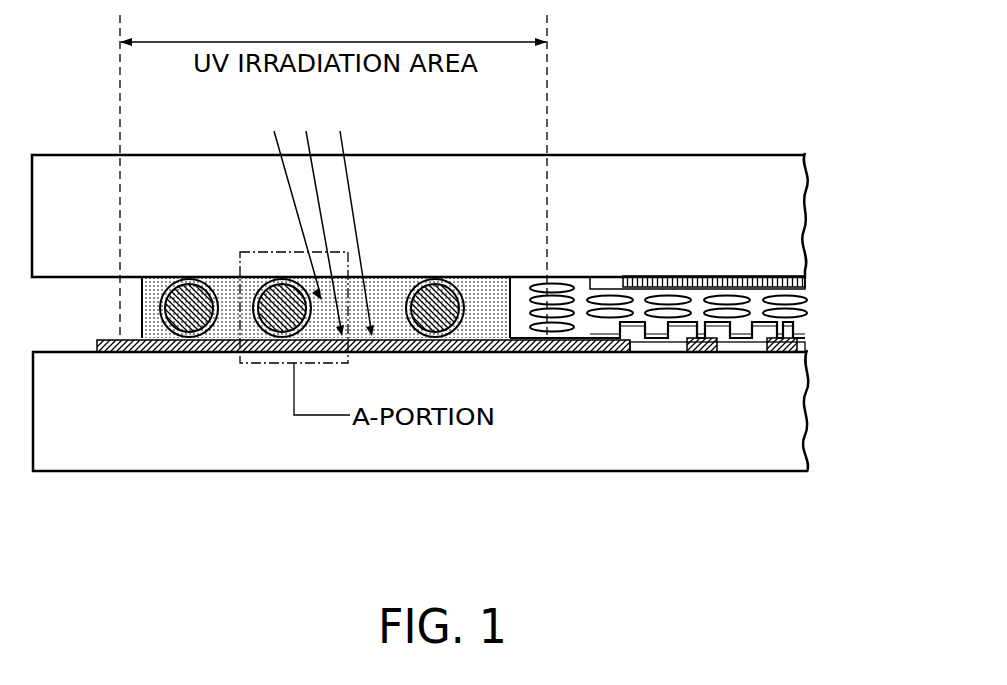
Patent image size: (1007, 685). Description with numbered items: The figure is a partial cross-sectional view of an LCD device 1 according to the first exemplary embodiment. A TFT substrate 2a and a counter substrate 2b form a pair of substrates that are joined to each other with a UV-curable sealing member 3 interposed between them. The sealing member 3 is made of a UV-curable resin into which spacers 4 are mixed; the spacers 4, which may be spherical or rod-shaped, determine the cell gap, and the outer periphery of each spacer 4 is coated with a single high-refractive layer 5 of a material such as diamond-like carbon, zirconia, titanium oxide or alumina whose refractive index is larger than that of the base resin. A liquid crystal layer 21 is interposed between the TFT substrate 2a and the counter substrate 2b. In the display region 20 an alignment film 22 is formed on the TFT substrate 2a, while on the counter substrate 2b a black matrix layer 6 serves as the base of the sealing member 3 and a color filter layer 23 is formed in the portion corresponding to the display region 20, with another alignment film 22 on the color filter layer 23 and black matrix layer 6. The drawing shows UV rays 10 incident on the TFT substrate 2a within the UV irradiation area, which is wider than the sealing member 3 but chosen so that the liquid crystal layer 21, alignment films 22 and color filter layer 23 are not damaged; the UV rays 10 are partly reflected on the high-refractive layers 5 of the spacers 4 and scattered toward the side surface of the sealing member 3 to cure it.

The LCD device 1 is at (418, 553).
The TFT substrate 2a is at (785, 183).
The counter substrate 2b is at (787, 393).
The UV-curable sealing member 3 is at (497, 277).
The spacer 4 is at (448, 277).
The high-refractive layer 5 is at (462, 277).
The black matrix layer 6 is at (612, 352).
The UV rays 10 is at (343, 138).
The display region 20 is at (748, 276).
The liquid crystal layer 21 is at (765, 322).
The alignment film 22 is at (805, 288).
The color filter layer 23 is at (740, 352).